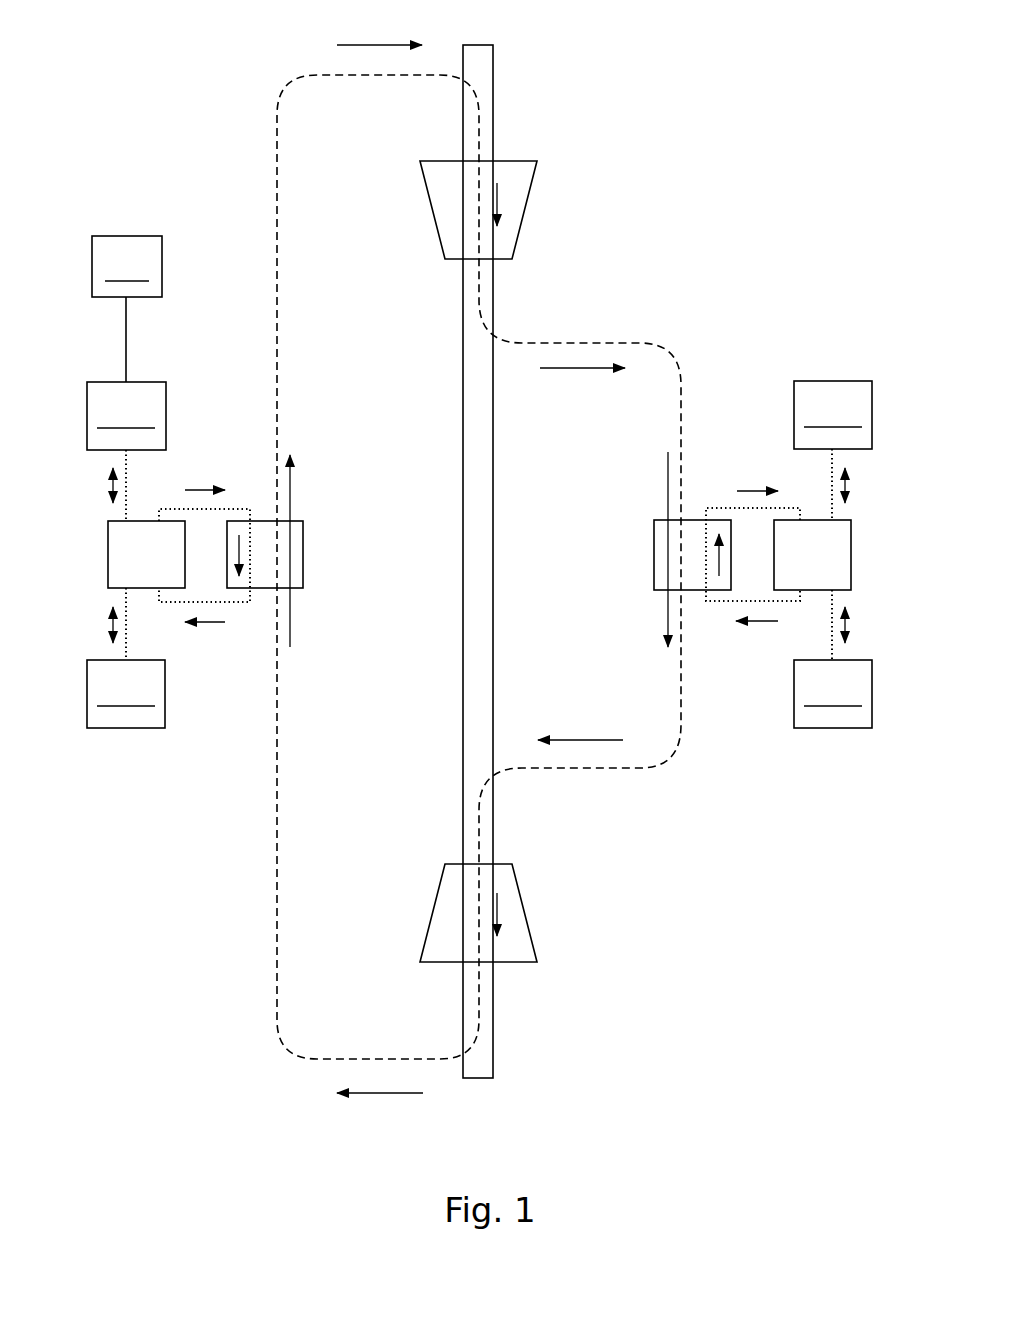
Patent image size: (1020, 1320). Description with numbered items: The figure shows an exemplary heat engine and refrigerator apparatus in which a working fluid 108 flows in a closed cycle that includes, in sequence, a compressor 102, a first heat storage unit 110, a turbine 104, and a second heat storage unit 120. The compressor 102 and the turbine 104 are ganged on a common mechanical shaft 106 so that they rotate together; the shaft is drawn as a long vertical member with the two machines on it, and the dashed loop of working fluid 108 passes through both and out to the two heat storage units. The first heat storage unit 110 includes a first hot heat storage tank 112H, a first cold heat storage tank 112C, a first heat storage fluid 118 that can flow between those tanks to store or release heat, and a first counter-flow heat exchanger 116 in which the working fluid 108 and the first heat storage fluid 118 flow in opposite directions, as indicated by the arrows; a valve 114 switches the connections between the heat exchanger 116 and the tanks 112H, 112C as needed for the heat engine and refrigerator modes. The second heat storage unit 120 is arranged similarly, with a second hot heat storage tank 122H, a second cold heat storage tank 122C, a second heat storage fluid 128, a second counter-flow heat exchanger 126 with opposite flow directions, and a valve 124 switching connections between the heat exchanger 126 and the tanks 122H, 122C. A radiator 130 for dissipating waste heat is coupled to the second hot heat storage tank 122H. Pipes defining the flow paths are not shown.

The compressor 102 is at (527, 206).
The turbine 104 is at (512, 912).
The common mechanical shaft 106 is at (463, 688).
The working fluid 108 is at (283, 106).
The first heat storage unit 110 is at (805, 332).
The first hot heat storage tank 112H is at (833, 415).
The first cold heat storage tank 112C is at (833, 694).
The valve 114 is at (851, 545).
The first counter-flow heat exchanger 116 is at (690, 520).
The first heat storage fluid 118 is at (712, 603).
The second heat storage unit 120 is at (153, 773).
The second hot heat storage tank 122H is at (126, 416).
The second cold heat storage tank 122C is at (126, 694).
The valve 124 is at (108, 556).
The second counter-flow heat exchanger 126 is at (258, 521).
The second heat storage fluid 128 is at (237, 603).
The radiator 130 is at (127, 309).